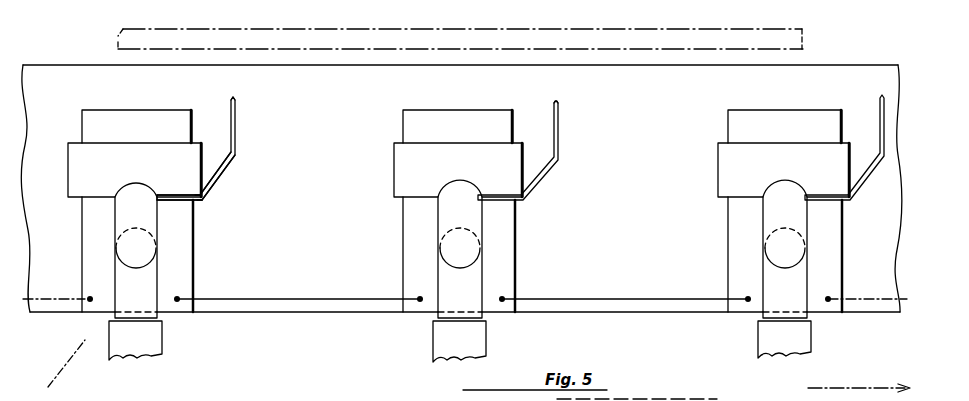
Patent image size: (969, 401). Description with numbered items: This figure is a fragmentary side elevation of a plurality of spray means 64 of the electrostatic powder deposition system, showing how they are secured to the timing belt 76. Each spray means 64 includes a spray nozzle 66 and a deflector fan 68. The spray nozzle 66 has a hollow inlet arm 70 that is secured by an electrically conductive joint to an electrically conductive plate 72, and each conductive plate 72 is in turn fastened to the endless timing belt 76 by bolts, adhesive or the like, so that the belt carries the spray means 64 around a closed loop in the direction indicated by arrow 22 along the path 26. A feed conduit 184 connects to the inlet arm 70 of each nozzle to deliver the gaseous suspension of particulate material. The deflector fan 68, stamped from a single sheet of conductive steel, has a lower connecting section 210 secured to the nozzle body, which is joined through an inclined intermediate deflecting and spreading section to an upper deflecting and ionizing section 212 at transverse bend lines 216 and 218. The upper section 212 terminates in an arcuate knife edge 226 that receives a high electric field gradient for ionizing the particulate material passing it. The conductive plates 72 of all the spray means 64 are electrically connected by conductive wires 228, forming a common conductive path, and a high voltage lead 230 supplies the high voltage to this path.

The direction of travel arrow 22 is at (862, 383).
The conveyor path / carrier 26 is at (805, 35).
The spray means 64 is at (200, 140).
The spray nozzle 66 is at (80, 163).
The deflector fan 68 is at (238, 127).
The hollow inlet arm 70 is at (142, 286).
The electrically conductive plate 72 is at (185, 240).
The timing belt 76 is at (59, 80).
The feed conduit 184 is at (150, 340).
The lower connecting section 210 is at (185, 197).
The upper deflecting and ionizing section 212 is at (237, 107).
The transverse bend line 216 is at (203, 197).
The transverse bend line 218 is at (236, 152).
The knife edge 226 is at (558, 97).
The conductive wires 228 is at (302, 295).
The high voltage lead 230 is at (90, 302).